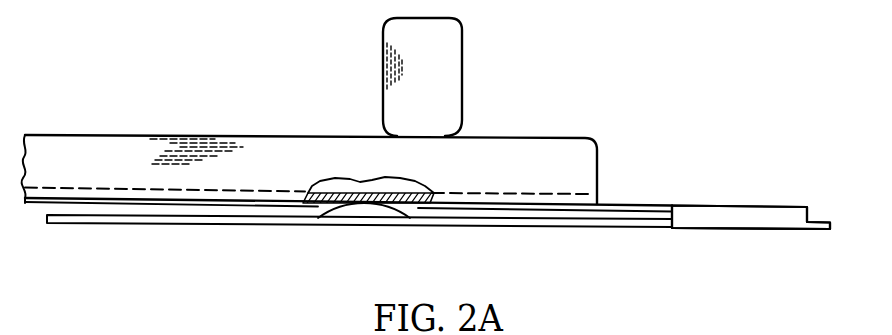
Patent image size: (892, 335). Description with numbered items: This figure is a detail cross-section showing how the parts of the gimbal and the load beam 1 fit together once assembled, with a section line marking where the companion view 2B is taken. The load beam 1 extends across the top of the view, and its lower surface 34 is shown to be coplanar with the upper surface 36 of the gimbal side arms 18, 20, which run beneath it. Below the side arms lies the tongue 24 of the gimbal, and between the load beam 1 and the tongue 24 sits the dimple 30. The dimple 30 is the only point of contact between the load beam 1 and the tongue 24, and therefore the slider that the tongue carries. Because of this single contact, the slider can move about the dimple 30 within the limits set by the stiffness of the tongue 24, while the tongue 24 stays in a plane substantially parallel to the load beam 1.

The load beam 1 is at (143, 112).
The section line 2B is at (363, 112).
The gimbal side arm 18 is at (627, 205).
The gimbal side arm 20 is at (751, 218).
The tongue 24 is at (498, 236).
The dimple 30 is at (375, 214).
The lower surface 34 is at (58, 199).
The upper surface 36 is at (193, 201).